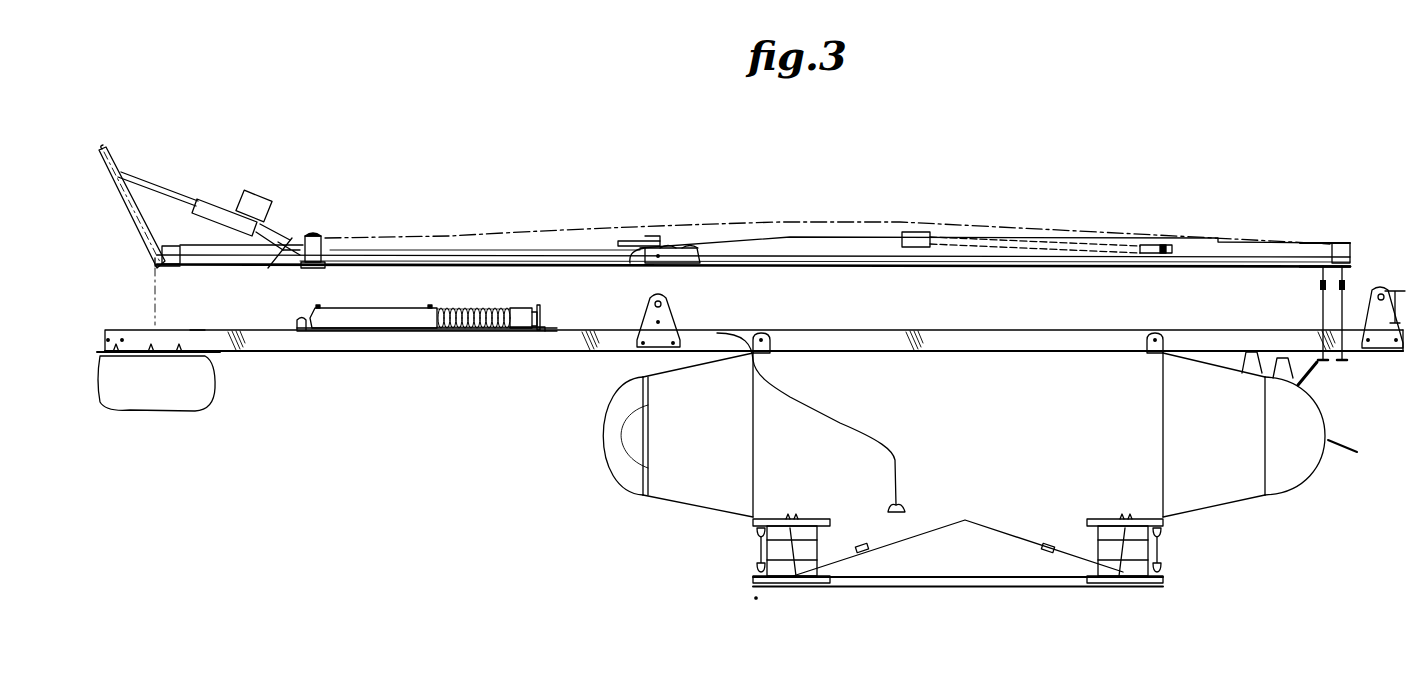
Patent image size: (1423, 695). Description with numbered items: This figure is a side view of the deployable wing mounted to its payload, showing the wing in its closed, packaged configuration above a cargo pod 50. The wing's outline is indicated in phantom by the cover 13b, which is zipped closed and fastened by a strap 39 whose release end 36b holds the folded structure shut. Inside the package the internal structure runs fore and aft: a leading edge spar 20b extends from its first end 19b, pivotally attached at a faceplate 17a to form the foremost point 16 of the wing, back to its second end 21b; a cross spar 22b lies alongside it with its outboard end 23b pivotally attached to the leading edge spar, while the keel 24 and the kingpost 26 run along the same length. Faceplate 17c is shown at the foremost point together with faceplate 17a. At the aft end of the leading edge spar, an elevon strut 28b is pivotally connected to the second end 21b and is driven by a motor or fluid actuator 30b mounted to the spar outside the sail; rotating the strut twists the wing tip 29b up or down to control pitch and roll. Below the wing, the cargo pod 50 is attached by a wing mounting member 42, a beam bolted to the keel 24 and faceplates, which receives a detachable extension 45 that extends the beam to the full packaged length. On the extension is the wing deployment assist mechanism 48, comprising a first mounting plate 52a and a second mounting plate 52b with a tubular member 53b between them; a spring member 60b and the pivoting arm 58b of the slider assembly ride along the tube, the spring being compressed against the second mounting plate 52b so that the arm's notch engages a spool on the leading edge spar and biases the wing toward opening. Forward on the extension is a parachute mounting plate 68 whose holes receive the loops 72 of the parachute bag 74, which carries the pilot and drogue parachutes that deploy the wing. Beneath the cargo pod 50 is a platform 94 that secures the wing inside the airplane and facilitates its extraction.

The cover 13b is at (1100, 192).
The foremost point 16 is at (1350, 250).
The faceplate 17a is at (1338, 243).
The lower flange 17c is at (1350, 264).
The first end of leading edge spar 19b is at (1330, 248).
The leading edge spar 20b is at (580, 248).
The second end of leading edge spar 21b is at (262, 250).
The cross spar 22b is at (795, 232).
The outboard end of cross spar 23b is at (632, 243).
The keel 24 is at (673, 257).
The kingpost 26 is at (930, 233).
The elevon strut 28b is at (112, 152).
The wing tip 29b is at (132, 175).
The motor or fluid actuator 30b is at (202, 203).
The release end of strap 36b is at (322, 243).
The strap 39 is at (320, 228).
The wing mounting member 42 is at (927, 333).
The detachable extension 45 is at (475, 425).
The wing deployment assist mechanism 48 is at (366, 334).
The cargo pod 50 is at (972, 451).
The first mounting plate 52a is at (297, 320).
The second mounting plate 52b is at (539, 313).
The tubular member 53b is at (533, 328).
The pivoting arm 58b is at (384, 321).
The spring member 60b is at (450, 307).
The parachute mounting plate 68 is at (197, 351).
The loop 72 is at (152, 350).
The parachute bag 74 is at (162, 396).
The platform 94 is at (753, 543).